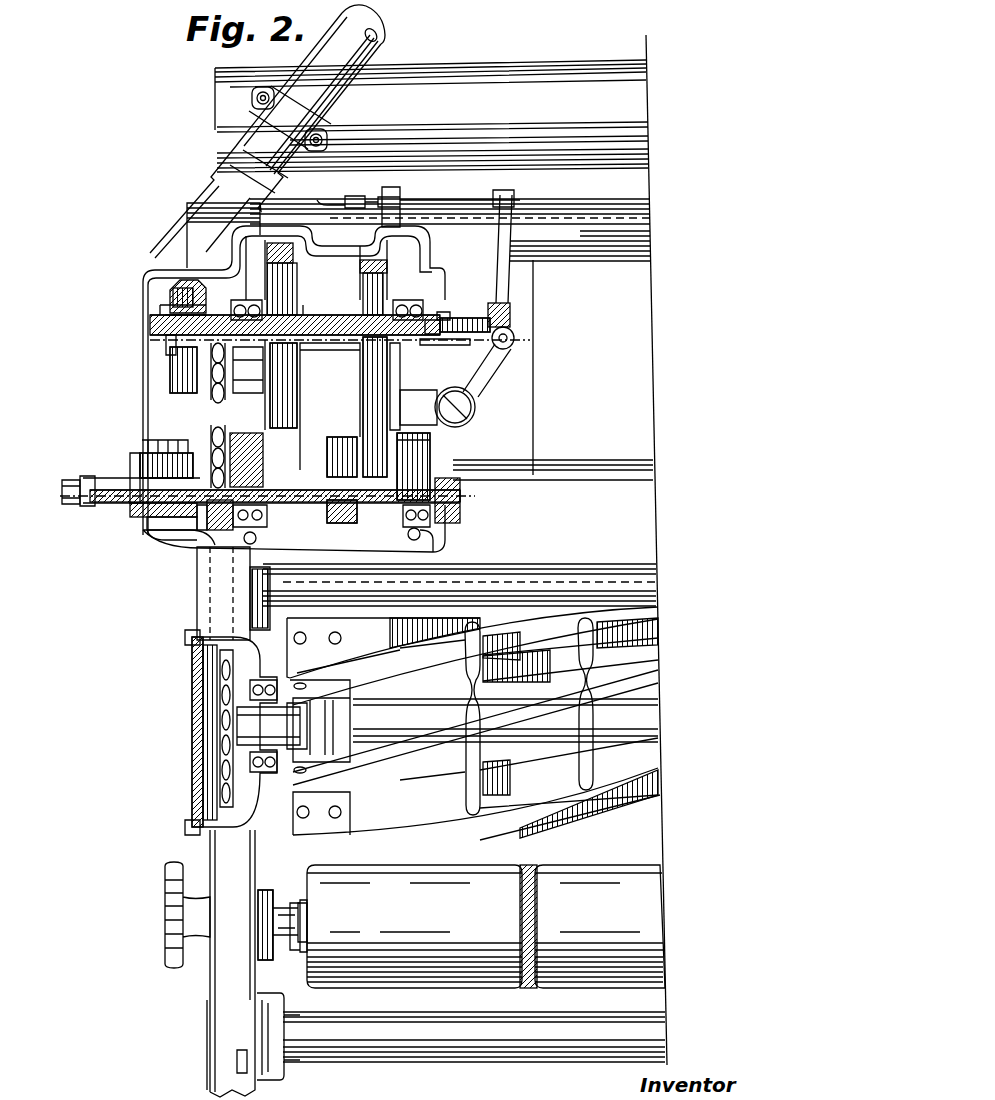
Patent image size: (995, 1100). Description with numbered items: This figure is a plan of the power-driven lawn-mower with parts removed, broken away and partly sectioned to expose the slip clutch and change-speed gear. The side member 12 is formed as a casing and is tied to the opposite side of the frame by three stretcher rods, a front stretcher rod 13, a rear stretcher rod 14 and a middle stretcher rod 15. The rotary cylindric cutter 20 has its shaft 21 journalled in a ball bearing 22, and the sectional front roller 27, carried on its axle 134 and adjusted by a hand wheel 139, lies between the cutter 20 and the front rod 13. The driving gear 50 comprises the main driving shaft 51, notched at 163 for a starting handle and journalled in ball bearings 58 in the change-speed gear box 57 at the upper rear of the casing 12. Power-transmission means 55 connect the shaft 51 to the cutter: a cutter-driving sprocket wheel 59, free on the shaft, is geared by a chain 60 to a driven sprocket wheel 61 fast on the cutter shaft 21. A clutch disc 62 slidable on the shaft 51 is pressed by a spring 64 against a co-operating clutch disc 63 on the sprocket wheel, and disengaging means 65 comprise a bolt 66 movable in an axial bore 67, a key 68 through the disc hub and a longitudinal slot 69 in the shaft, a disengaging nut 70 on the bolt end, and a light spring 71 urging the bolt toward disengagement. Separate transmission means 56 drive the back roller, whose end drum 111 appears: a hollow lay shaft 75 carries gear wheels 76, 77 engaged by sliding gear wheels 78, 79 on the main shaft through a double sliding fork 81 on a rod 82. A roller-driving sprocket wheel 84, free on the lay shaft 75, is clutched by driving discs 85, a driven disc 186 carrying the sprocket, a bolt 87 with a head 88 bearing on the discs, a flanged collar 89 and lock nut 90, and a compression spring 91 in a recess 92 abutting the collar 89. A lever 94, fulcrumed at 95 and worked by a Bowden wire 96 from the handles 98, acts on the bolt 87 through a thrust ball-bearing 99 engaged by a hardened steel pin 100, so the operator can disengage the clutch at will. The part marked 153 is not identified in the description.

The side member 12 is at (230, 847).
The front stretcher rod 13 is at (580, 1030).
The rear stretcher rod 14 is at (628, 232).
The middle stretcher rod 15 is at (612, 583).
The rotary cylindric cutter 20 is at (438, 815).
The cutter shaft 21 is at (547, 720).
The ball bearing 22 is at (250, 767).
The front roller 27 is at (483, 877).
The driving gear 50 is at (440, 513).
The main driving shaft 51 is at (627, 467).
The power-transmission means 55 is at (197, 607).
The power transmission means 56 is at (140, 272).
The change-speed gear box 57 is at (147, 358).
The ball bearings 58 is at (432, 450).
The cutter-driving sprocket wheel 59 is at (210, 432).
The chain 60 is at (190, 657).
The driven sprocket wheel 61 is at (227, 677).
The clutch disc 62 is at (213, 527).
The co-operating clutch disc 63 is at (212, 450).
The spring 64 is at (200, 456).
The disengaging means 65 is at (120, 503).
The bolt 66 is at (100, 497).
The axial bore 67 is at (123, 487).
The key 68 is at (180, 520).
The longitudinal slot 69 is at (163, 507).
The disengaging nut 70 is at (73, 483).
The light spring 71 is at (197, 522).
The hollow lay shaft 75 is at (333, 323).
The gear wheel 76 is at (362, 268).
The gear wheel 77 is at (280, 250).
The sliding gear wheel 78 is at (417, 547).
The sliding gear wheel 79 is at (347, 470).
The double sliding fork 81 is at (323, 517).
The rod 82 is at (303, 473).
The roller-driving sprocket wheel 84 is at (217, 277).
The driving discs 85 is at (175, 312).
The bolt 87 is at (168, 340).
The head 88 is at (165, 328).
The flanged collar 89 is at (448, 327).
The lock nut 90 is at (493, 370).
The compression spring 91 is at (427, 320).
The recess 92 is at (458, 290).
The lever 94 is at (510, 212).
The fulcrum 95 is at (471, 411).
The Bowden wire 96 is at (318, 205).
The handles 98 is at (368, 35).
The thrust ball-bearing 99 is at (508, 302).
The hardened steel pin 100 is at (512, 338).
The end drum 111 is at (517, 355).
The front roller axle 134 is at (287, 927).
The hand wheel 139 is at (163, 907).
The bearing block 153 is at (223, 1077).
The notch 163 is at (137, 470).
The driven disc 186 is at (198, 290).